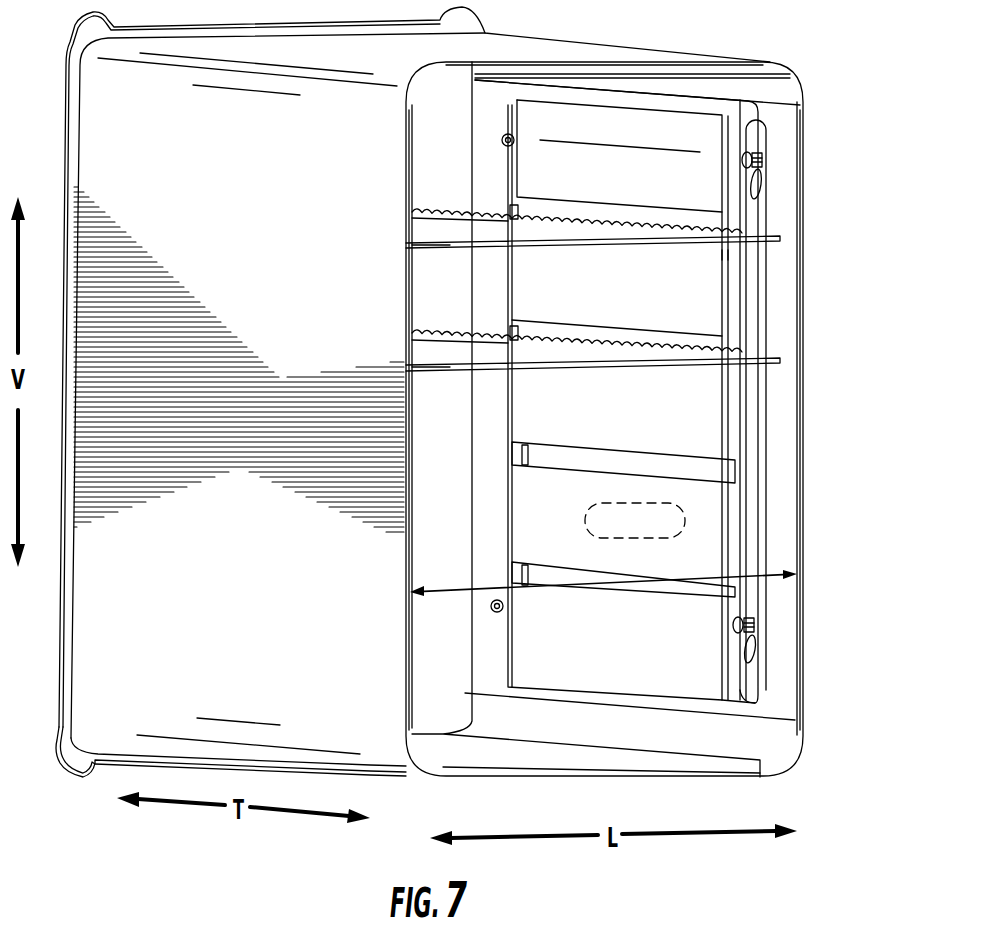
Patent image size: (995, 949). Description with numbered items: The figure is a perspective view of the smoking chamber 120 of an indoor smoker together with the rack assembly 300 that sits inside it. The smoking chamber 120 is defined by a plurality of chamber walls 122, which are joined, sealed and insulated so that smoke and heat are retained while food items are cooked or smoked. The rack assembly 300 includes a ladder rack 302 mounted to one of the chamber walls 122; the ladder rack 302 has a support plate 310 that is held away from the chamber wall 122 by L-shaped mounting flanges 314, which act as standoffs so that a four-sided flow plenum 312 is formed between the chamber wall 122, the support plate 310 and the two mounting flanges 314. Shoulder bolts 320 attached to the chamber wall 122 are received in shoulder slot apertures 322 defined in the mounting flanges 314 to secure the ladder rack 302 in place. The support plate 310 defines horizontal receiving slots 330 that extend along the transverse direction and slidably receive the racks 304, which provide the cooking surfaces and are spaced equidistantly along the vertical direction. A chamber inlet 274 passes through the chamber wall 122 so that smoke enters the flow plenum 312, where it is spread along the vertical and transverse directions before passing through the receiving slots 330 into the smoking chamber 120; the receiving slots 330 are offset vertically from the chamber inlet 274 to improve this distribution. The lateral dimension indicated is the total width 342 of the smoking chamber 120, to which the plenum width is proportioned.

The smoking chamber 120 is at (458, 464).
The chamber walls 122 is at (404, 667).
The chamber inlet 274 is at (680, 520).
The rack assembly 300 is at (598, 728).
The ladder rack 302 is at (700, 417).
The racks 304 is at (447, 250).
The support plate 310 is at (631, 416).
The flow plenum 312 is at (705, 283).
The mounting flanges 314 is at (737, 258).
The shoulder bolts 320 is at (757, 157).
The shoulder slot apertures 322 is at (777, 181).
The receiving slots 330 is at (740, 345).
The total width 342 is at (573, 583).